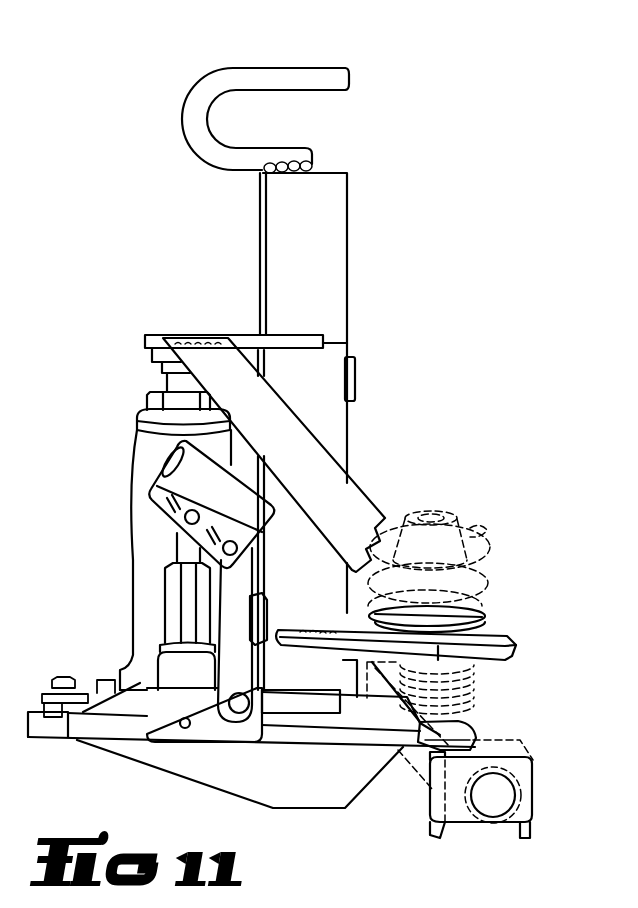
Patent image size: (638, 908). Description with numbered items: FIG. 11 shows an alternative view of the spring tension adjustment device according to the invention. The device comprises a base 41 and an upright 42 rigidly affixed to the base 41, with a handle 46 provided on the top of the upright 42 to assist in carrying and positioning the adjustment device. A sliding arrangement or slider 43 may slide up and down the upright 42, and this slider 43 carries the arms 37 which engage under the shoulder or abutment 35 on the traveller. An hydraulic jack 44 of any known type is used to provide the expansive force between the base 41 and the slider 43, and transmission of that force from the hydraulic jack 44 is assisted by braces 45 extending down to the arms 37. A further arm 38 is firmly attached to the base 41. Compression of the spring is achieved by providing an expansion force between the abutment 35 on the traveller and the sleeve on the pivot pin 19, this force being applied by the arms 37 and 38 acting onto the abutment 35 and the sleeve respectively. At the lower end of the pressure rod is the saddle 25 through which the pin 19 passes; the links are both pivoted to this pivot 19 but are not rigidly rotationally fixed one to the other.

The handle 46 is at (283, 80).
The upright 42 is at (320, 227).
The slider 43 is at (320, 414).
The braces 45 is at (327, 478).
The hydraulic jack 44 is at (162, 556).
The base 41 is at (357, 718).
The arms 37 is at (512, 638).
The abutment 35 is at (493, 620).
The arm 38 is at (447, 728).
The saddle 25 is at (487, 730).
The pin 19 is at (495, 795).